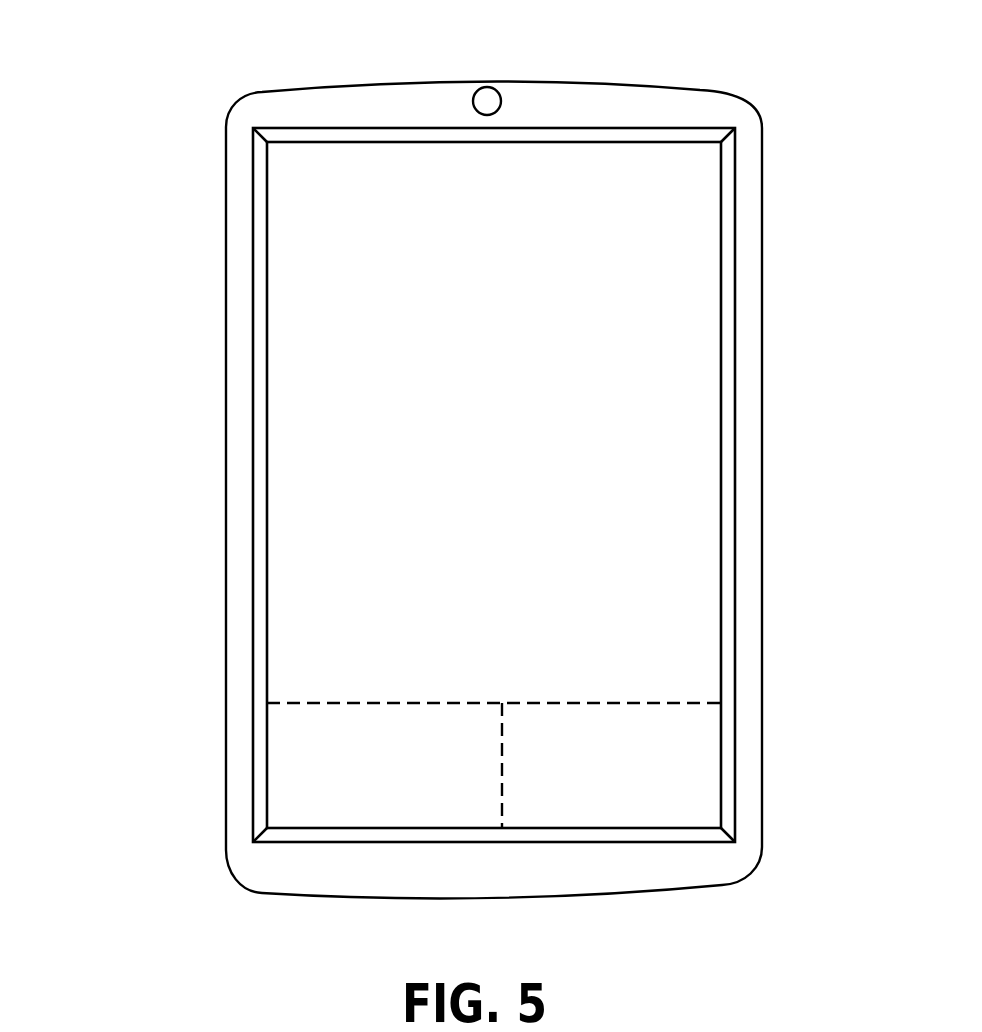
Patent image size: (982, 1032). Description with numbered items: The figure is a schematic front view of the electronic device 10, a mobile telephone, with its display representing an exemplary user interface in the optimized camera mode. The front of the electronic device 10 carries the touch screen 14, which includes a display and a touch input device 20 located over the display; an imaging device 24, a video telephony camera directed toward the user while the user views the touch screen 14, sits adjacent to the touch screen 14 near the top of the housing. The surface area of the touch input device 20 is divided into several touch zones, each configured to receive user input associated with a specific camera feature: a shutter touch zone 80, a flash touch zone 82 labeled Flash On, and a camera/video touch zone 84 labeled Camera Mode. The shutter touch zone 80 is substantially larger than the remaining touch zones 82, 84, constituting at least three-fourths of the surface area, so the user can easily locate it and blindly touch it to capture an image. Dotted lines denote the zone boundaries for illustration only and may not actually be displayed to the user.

The electronic device 10 is at (459, 470).
The touch screen 14 is at (288, 863).
The touch input device 20 is at (290, 472).
The imaging device 24 is at (499, 92).
The shutter touch zone 80 is at (290, 356).
The flash touch zone 82 is at (308, 786).
The camera/video touch zone 84 is at (678, 787).